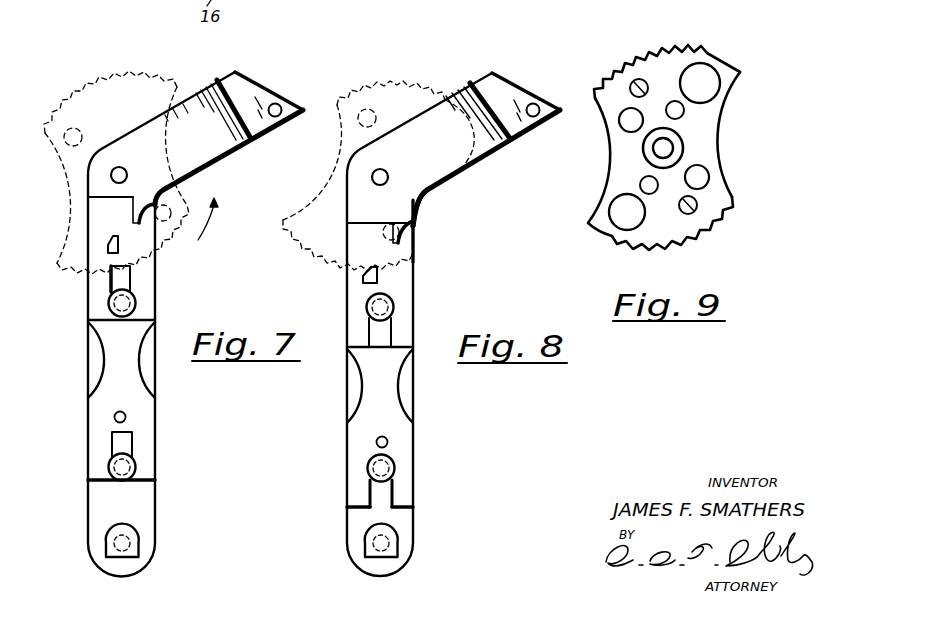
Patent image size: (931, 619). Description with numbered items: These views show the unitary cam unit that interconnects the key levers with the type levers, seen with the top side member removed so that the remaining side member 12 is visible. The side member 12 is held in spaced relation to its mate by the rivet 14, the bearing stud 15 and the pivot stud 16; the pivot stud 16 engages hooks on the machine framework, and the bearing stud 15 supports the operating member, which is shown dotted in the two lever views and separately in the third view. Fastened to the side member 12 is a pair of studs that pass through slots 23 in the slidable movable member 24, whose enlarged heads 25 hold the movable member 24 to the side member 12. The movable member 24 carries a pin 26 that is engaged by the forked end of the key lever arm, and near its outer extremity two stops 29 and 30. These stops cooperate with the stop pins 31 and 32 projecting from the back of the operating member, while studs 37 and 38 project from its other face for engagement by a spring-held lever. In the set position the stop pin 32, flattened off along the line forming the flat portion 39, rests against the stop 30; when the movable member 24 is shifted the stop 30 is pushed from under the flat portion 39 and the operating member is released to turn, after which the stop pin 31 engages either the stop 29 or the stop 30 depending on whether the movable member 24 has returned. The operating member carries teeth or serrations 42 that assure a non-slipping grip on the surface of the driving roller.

In FIG. 7, the side member 12 is at (88, 520).
In FIG. 8, the side member 12 is at (347, 396).
In FIG. 7, the rivet 14 is at (278, 104).
In FIG. 8, the rivet 14 is at (536, 104).
In FIG. 7, the bearing stud 15 is at (127, 176).
In FIG. 8, the bearing stud 15 is at (388, 180).
In FIG. 7, the pivot stud 16 is at (139, 543).
In FIG. 8, the pivot stud 16 is at (365, 543).
In FIG. 7, the slots 23 is at (110, 287).
In FIG. 7, the movable member 24 is at (148, 463).
In FIG. 8, the movable member 24 is at (400, 455).
In FIG. 7, the enlarged heads 25 is at (135, 318).
In FIG. 7, the pin 26 is at (120, 411).
In FIG. 8, the pin 26 is at (376, 444).
In FIG. 7, the stop 29 is at (108, 245).
In FIG. 8, the stop 29 is at (363, 280).
In FIG. 7, the stop 30 is at (150, 212).
In FIG. 8, the stop 30 is at (421, 240).
In FIG. 9, the stop pin 31 is at (637, 80).
In FIG. 9, the stop pin 32 is at (692, 207).
In FIG. 9, the stud 37 is at (648, 185).
In FIG. 9, the stud 38 is at (677, 111).
In FIG. 8, the flat portion 39 is at (389, 236).
In FIG. 9, the teeth or serrations 42 is at (670, 57).